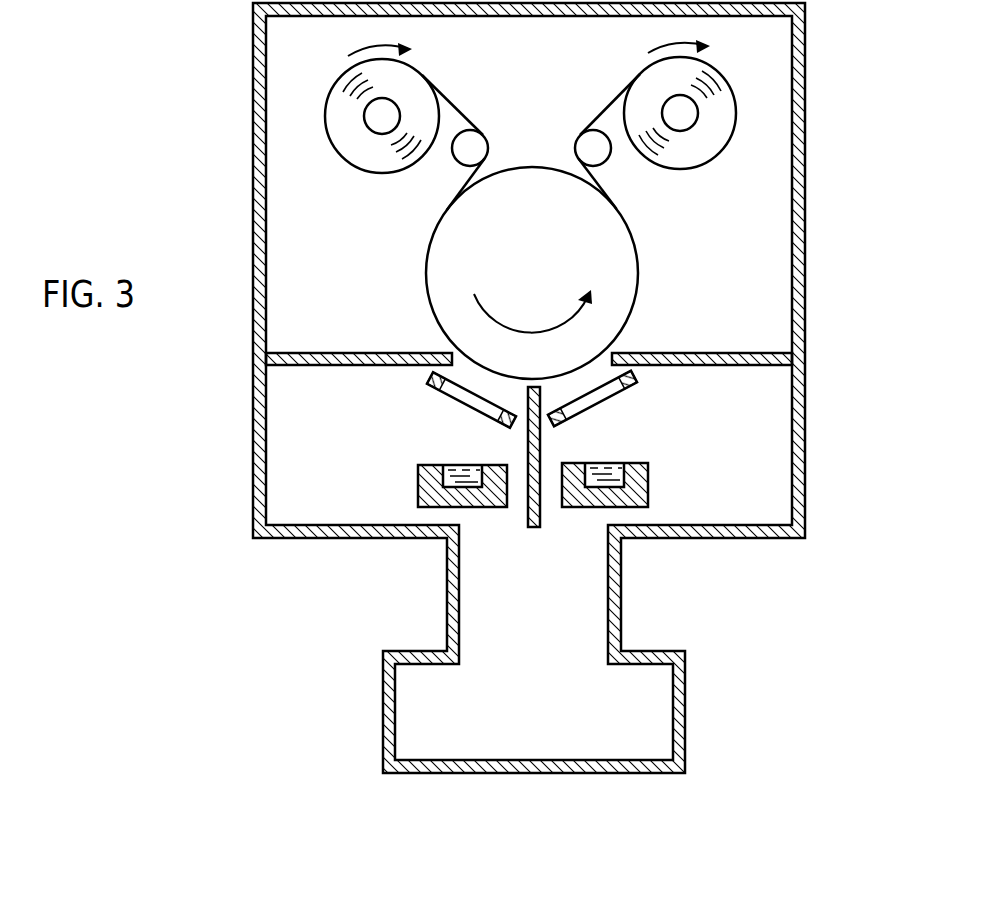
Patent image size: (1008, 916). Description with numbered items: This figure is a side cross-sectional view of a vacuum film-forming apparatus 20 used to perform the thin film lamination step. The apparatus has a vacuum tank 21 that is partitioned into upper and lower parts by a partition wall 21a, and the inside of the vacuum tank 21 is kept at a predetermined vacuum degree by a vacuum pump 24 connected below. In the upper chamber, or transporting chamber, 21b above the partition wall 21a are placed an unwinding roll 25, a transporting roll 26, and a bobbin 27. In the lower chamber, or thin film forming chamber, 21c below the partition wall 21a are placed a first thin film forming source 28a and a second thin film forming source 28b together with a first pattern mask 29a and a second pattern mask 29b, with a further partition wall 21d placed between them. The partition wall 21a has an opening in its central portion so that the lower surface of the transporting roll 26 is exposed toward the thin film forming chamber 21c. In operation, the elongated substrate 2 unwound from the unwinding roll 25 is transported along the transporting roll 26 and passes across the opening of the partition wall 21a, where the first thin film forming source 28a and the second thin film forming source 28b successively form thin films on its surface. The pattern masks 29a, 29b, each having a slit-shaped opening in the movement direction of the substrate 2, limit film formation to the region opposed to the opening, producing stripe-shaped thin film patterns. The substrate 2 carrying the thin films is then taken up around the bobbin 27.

The vacuum film-forming apparatus 20 is at (229, 97).
The vacuum tank 21 is at (805, 103).
The partition wall 21a is at (730, 352).
The upper chamber (transporting chamber) 21b is at (772, 215).
The lower chamber (thin film forming chamber) 21c is at (763, 452).
The partition wall 21d is at (540, 507).
The vacuum pump 24 is at (642, 717).
The unwinding roll 25 is at (355, 165).
The transporting roll 26 is at (530, 165).
The bobbin 27 is at (688, 170).
The elongated substrate 2 is at (455, 100).
The first thin film forming source 28a is at (418, 485).
The second thin film forming source 28b is at (648, 485).
The first pattern mask 29a is at (435, 395).
The second pattern mask 29b is at (630, 395).